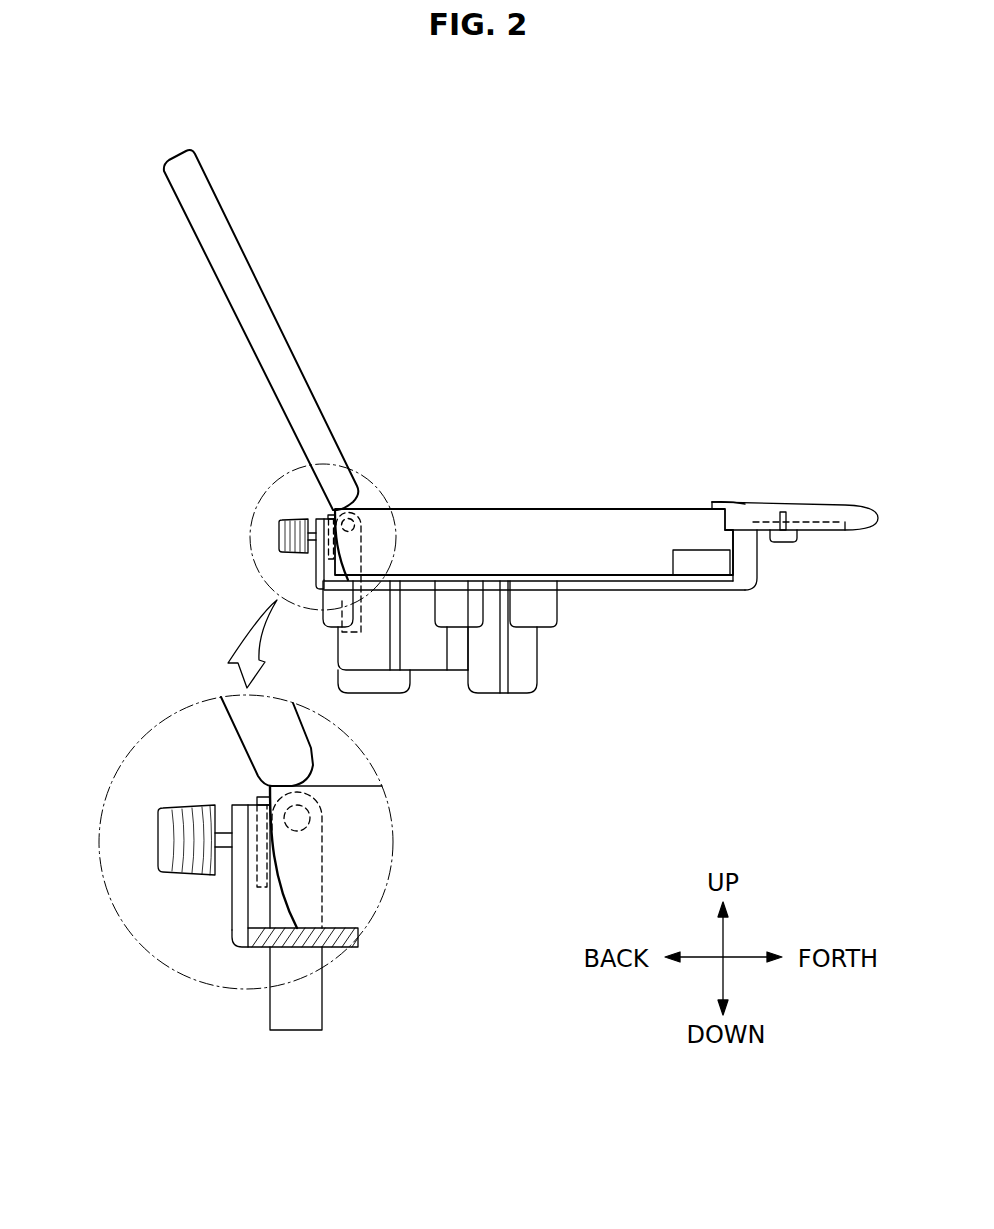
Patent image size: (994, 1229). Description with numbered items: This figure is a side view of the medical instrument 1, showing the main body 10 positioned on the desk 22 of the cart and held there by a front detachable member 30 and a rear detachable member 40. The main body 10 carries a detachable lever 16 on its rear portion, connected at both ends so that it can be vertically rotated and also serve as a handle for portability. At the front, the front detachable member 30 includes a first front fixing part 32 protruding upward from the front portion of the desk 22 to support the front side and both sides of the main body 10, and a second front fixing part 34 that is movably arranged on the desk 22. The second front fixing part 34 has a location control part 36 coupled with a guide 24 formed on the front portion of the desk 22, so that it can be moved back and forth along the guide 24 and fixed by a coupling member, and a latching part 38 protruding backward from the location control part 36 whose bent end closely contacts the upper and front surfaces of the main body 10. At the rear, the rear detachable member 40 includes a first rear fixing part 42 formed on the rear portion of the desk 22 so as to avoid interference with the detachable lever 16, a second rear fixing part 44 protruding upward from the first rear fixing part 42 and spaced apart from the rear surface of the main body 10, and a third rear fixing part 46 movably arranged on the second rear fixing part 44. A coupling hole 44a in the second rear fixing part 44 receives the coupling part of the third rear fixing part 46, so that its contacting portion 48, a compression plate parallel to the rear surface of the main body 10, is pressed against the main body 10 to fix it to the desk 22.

The medical instrument 1 is at (582, 284).
The main body 10 is at (505, 508).
The detachable lever 16 is at (295, 1033).
The desk 22 is at (601, 592).
The guide 24 is at (753, 552).
The front detachable member 30 is at (775, 562).
The first front fixing part 32 is at (701, 615).
The second front fixing part 34 is at (808, 538).
The location control part 36 is at (860, 506).
The latching part 38 is at (712, 502).
The rear detachable member 40 is at (158, 803).
The first rear fixing part 42 is at (337, 944).
The second rear fixing part 44 is at (232, 900).
The coupling hole 44a is at (228, 800).
The third rear fixing part 46 is at (163, 843).
The contacting portion 48 is at (242, 948).